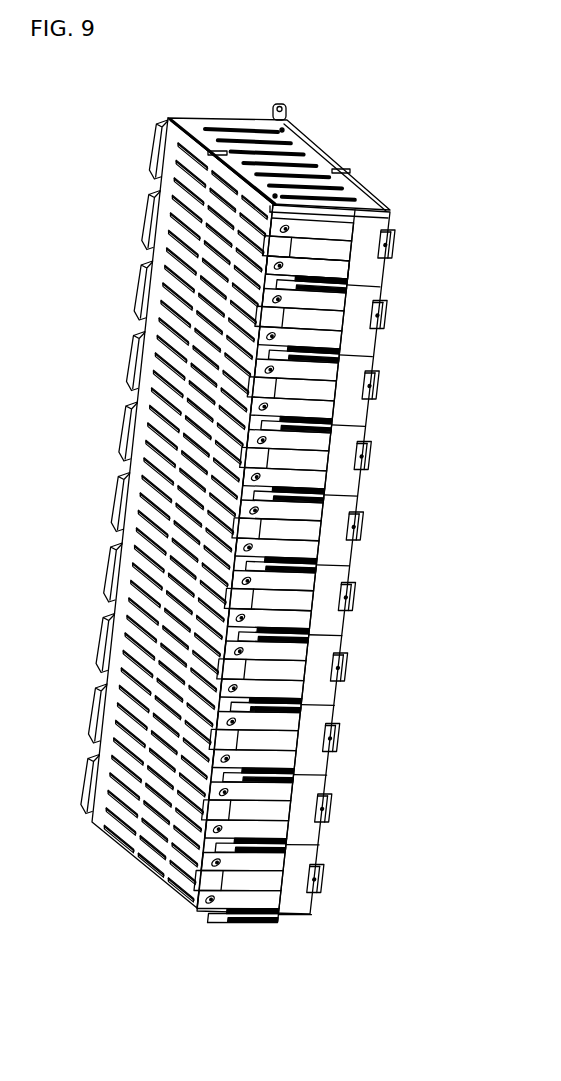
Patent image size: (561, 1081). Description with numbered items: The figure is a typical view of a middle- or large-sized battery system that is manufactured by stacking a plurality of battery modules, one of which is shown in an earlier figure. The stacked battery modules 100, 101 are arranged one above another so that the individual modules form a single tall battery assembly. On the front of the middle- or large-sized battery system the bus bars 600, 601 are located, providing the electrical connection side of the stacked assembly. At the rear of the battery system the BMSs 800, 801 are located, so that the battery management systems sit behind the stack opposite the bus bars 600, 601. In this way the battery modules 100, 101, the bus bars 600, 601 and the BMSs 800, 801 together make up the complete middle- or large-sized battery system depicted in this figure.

The BMS 800 is at (162, 157).
The BMS 801 is at (150, 222).
The bus bar 600 is at (343, 232).
The bus bar 601 is at (343, 263).
The battery module 100 is at (388, 237).
The battery module 101 is at (377, 338).